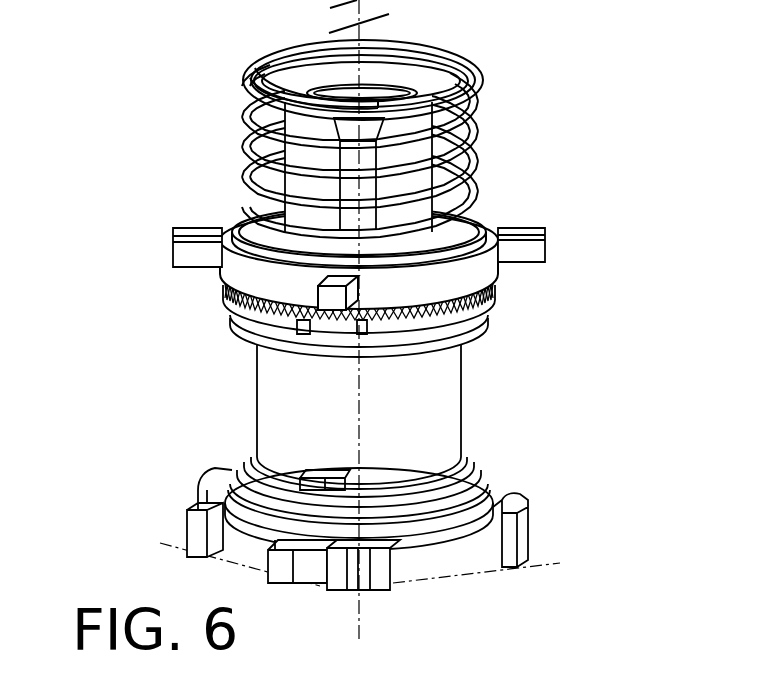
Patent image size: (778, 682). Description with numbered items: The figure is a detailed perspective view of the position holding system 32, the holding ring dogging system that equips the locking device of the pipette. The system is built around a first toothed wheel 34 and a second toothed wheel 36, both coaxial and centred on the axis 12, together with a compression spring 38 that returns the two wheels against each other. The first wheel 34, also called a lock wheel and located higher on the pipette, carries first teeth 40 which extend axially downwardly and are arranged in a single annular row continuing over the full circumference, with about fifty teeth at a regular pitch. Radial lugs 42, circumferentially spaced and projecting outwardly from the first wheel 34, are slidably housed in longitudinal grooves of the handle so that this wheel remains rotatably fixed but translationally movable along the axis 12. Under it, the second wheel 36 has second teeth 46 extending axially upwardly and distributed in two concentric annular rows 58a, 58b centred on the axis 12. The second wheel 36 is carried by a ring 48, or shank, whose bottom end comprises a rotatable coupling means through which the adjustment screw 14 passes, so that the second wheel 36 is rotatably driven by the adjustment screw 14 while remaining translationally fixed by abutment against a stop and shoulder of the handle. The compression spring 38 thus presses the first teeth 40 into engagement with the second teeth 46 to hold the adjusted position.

The axis 12 is at (362, 628).
The adjustment screw 14 is at (470, 158).
The position holding system 32 is at (168, 118).
The first toothed wheel 34 is at (211, 272).
The second toothed wheel 36 is at (219, 327).
The compression spring 38 is at (475, 108).
The first teeth 40 is at (433, 310).
The radial lugs 42 is at (532, 248).
The second teeth 46 is at (405, 313).
The ring 48 is at (276, 410).
The annular row 58a is at (276, 322).
The annular row 58b is at (255, 301).